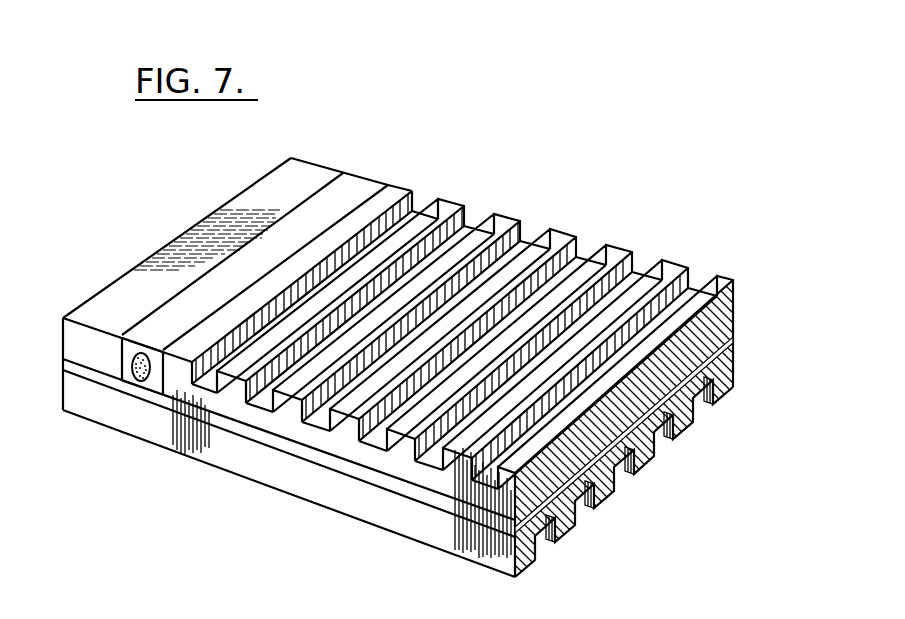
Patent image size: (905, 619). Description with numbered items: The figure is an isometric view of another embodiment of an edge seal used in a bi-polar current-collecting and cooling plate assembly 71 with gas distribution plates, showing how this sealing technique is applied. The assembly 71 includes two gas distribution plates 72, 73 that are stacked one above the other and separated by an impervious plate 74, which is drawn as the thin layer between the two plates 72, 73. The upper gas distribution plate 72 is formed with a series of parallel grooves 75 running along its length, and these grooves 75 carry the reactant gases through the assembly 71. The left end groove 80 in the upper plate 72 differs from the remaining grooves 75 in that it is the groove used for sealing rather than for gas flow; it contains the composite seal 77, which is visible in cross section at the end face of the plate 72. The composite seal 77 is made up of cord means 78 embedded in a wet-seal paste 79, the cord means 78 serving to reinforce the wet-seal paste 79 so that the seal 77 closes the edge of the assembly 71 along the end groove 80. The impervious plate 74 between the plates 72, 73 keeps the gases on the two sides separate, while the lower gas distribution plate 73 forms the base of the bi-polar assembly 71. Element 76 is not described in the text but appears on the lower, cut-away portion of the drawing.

The bi-polar plate assembly 71 is at (197, 224).
The gas distribution plate 72 is at (78, 310).
The gas distribution plate 73 is at (250, 462).
The impervious plate 74 is at (323, 455).
The grooves 75 is at (474, 218).
The bottom teeth 76 is at (642, 455).
The composite seal 77 is at (149, 398).
The cord means 78 is at (138, 378).
The wet-seal paste 79 is at (128, 370).
The left end groove 80 is at (390, 178).